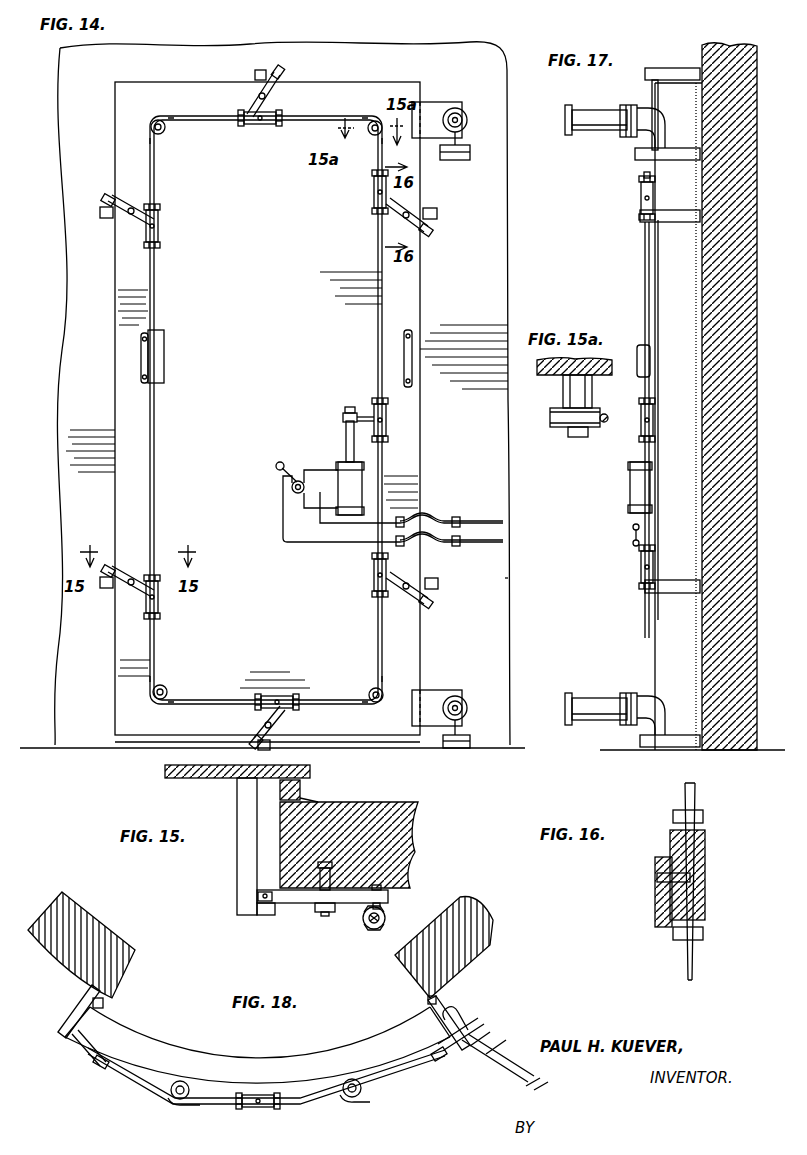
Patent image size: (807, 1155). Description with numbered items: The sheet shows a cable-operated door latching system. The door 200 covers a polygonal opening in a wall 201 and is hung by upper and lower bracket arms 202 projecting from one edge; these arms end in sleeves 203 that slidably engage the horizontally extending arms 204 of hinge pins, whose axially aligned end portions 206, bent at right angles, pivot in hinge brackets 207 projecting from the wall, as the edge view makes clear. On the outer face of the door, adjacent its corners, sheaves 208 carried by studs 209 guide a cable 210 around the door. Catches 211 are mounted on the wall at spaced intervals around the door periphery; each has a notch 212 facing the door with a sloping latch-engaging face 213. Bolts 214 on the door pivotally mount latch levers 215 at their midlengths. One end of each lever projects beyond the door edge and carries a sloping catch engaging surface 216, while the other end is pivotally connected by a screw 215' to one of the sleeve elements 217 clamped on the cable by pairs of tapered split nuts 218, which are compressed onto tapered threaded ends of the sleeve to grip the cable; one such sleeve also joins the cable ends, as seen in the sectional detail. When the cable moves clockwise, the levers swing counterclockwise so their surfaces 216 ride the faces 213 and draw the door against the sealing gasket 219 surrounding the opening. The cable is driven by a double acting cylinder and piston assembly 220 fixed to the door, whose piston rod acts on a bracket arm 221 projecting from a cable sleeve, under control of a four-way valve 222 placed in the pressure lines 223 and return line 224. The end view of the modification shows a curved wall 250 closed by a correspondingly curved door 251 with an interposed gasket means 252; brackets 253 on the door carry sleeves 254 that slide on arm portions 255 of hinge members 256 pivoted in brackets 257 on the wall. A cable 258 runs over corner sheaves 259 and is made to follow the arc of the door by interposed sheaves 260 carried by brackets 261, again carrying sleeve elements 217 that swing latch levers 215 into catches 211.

In FIG. 14, the door 200 is at (106, 495).
In FIG. 15, the door 200 is at (405, 820).
In FIG. 17, the door 200 is at (644, 295).
In FIG. 14, the wall 201 is at (496, 580).
In FIG. 15, the wall 201 is at (165, 768).
In FIG. 15A, the wall 201 is at (602, 360).
In FIG. 17, the wall 201 is at (745, 50).
In FIG. 14, the bracket arms 202 is at (432, 100).
In FIG. 17, the bracket arms 202 is at (638, 104).
In FIG. 14, the sleeves 203 is at (464, 125).
In FIG. 17, the sleeves 203 is at (622, 136).
In FIG. 17, the arms 204 is at (590, 132).
In FIG. 14, the end portions 206 is at (471, 152).
In FIG. 17, the end portions 206 is at (676, 160).
In FIG. 14, the hinge brackets 207 is at (464, 160).
In FIG. 17, the hinge brackets 207 is at (678, 210).
In FIG. 14, the sheaves 208 is at (162, 133).
In FIG. 15A, the sheaves 208 is at (560, 426).
In FIG. 14, the studs 209 is at (160, 124).
In FIG. 15A, the studs 209 is at (566, 393).
In FIG. 14, the cable 210 is at (156, 438).
In FIG. 15, the cable 210 is at (368, 928).
In FIG. 15A, the cable 210 is at (607, 423).
In FIG. 17, the cable 210 is at (644, 304).
In FIG. 16, the cable 210 is at (692, 792).
In FIG. 14, the catches 211 is at (260, 70).
In FIG. 15, the catches 211 is at (237, 890).
In FIG. 17, the catches 211 is at (645, 74).
In FIG. 18, the catches 211 is at (70, 1012).
In FIG. 15, the notches 212 is at (276, 903).
In FIG. 15, the latch-engaging faces 213 is at (236, 914).
In FIG. 14, the bolts 214 is at (266, 98).
In FIG. 15, the bolts 214 is at (324, 913).
In FIG. 14, the latch levers 215 is at (275, 407).
In FIG. 15, the latch levers 215 is at (343, 874).
In FIG. 17, the latch levers 215 is at (670, 115).
In FIG. 16, the latch levers 215 is at (639, 898).
In FIG. 18, the latch levers 215 is at (257, 1044).
In FIG. 15, the screws 215' is at (416, 884).
In FIG. 16, the screws 215' is at (647, 886).
In FIG. 14, the catch engaging surface 216 is at (285, 88).
In FIG. 15, the catch engaging surface 216 is at (272, 905).
In FIG. 14, the sleeve elements 217 is at (160, 220).
In FIG. 16, the sleeve elements 217 is at (705, 864).
In FIG. 18, the sleeve elements 217 is at (272, 1108).
In FIG. 15, the tapered split nuts 218 is at (386, 913).
In FIG. 16, the tapered split nuts 218 is at (703, 816).
In FIG. 15, the sealing gasket 219 is at (300, 790).
In FIG. 17, the sealing gasket 219 is at (692, 546).
In FIG. 14, the cylinder and piston assembly 220 is at (364, 488).
In FIG. 17, the cylinder and piston assembly 220 is at (621, 504).
In FIG. 14, the bracket arm 221 is at (350, 412).
In FIG. 14, the four-way valve 222 is at (300, 480).
In FIG. 17, the four-way valve 222 is at (632, 528).
In FIG. 14, the pressure lines 223 is at (345, 530).
In FIG. 14, the return line 224 is at (292, 543).
In FIG. 17, the return line 224 is at (632, 545).
In FIG. 18, the curved wall 250 is at (92, 933).
In FIG. 18, the curved door 251 is at (125, 1034).
In FIG. 18, the gasket means 252 is at (106, 1005).
In FIG. 18, the brackets 253 is at (478, 1056).
In FIG. 18, the sleeves 254 is at (492, 1030).
In FIG. 18, the arm portions 255 is at (500, 1048).
In FIG. 18, the hinge members 256 is at (525, 1086).
In FIG. 18, the brackets 257 is at (470, 1004).
In FIG. 18, the cable 258 is at (165, 1098).
In FIG. 18, the sheaves 259 is at (108, 1070).
In FIG. 18, the interposed sheaves 260 is at (170, 1100).
In FIG. 18, the brackets 261 is at (183, 1082).